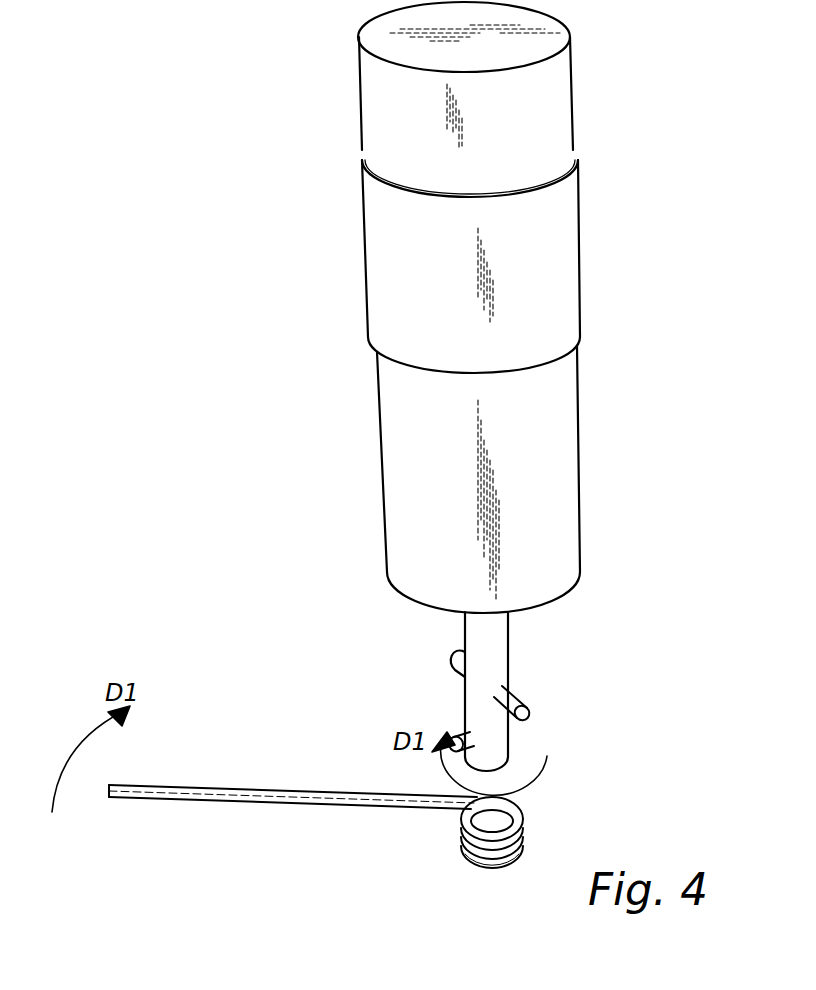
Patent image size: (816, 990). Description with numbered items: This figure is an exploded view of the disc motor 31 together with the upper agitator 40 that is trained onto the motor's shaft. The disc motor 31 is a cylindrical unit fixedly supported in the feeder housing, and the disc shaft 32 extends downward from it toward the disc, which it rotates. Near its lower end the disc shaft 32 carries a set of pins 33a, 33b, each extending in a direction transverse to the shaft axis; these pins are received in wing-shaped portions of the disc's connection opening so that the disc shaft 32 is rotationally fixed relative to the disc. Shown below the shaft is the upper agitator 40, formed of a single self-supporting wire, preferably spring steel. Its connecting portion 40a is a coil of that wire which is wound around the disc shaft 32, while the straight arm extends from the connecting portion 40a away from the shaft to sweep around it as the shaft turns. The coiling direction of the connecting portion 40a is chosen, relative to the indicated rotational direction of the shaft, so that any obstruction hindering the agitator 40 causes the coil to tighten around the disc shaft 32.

The disc motor 31 is at (545, 498).
The disc shaft 32 is at (482, 641).
The pin 33a is at (514, 700).
The pin 33b is at (513, 722).
The upper agitator 40 is at (342, 843).
The connecting portion 40a is at (535, 797).